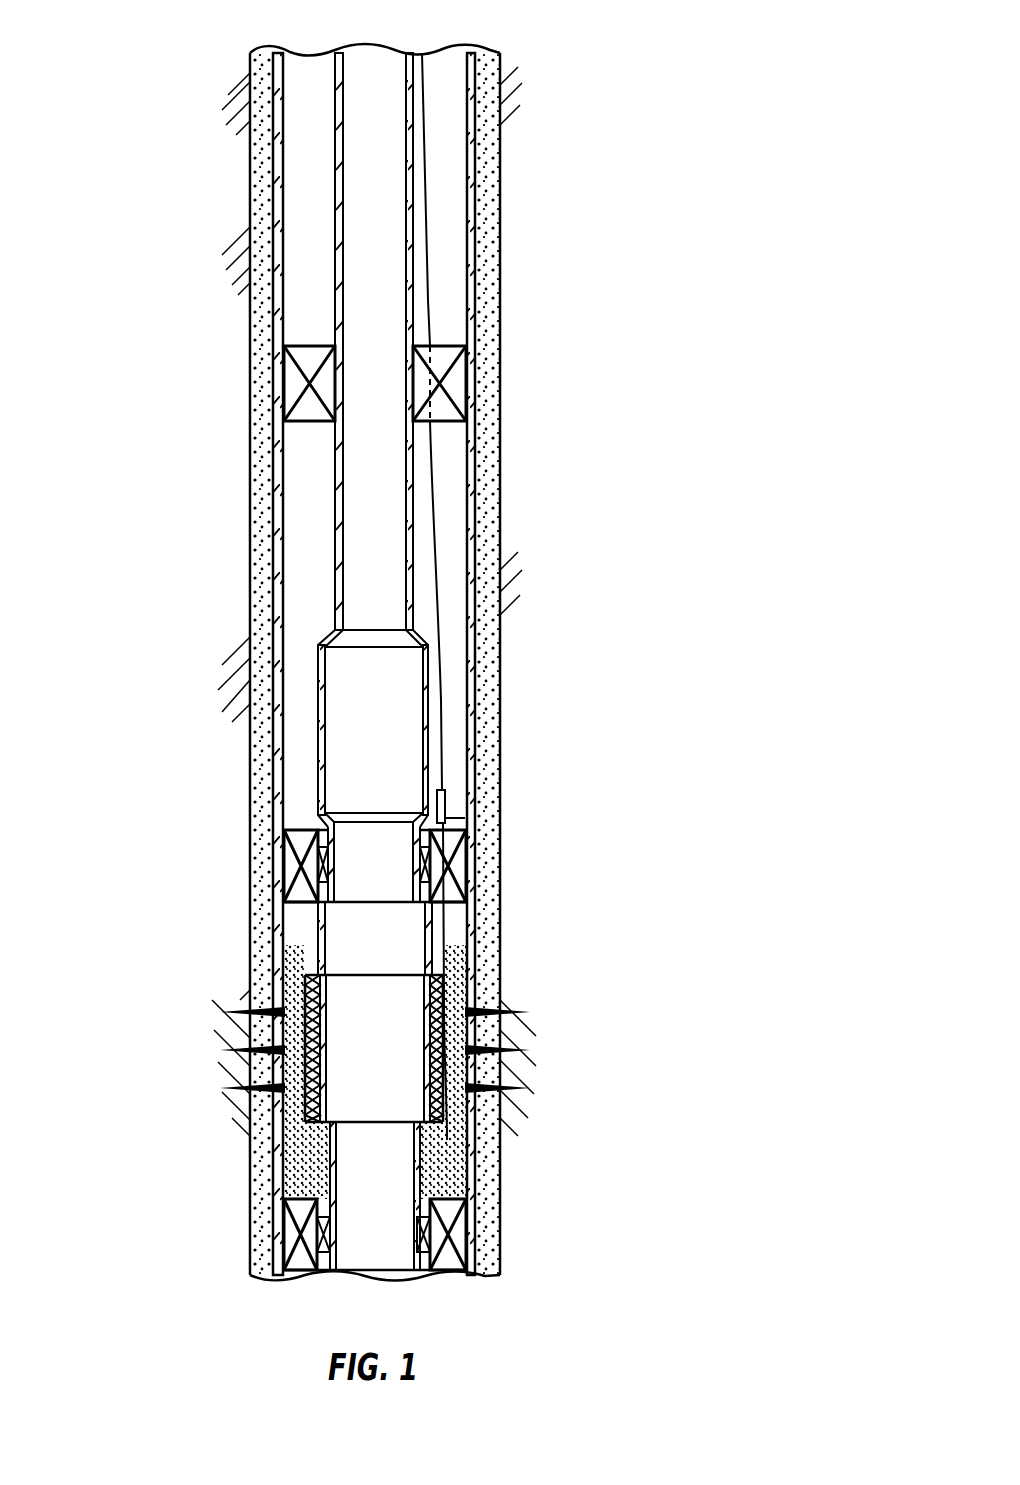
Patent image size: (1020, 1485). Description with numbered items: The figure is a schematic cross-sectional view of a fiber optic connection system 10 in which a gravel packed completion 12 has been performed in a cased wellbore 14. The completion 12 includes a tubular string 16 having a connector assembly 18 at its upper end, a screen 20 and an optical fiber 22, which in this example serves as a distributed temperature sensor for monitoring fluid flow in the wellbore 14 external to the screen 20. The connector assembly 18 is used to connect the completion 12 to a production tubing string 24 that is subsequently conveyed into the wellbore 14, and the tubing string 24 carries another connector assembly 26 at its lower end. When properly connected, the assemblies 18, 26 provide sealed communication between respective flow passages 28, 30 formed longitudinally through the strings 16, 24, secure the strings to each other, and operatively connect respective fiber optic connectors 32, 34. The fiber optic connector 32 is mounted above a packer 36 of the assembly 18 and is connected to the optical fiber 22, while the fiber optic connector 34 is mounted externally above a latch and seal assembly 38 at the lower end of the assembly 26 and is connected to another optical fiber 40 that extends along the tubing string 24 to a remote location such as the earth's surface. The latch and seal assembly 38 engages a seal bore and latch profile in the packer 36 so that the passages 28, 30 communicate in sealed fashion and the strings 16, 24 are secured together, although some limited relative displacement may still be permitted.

The fiber optic connection system 10 is at (690, 97).
The gravel packed completion 12 is at (458, 962).
The wellbore 14 is at (467, 158).
The tubular string 16 is at (316, 1150).
The connector assembly 18 is at (311, 824).
The screen 20 is at (305, 1106).
The optical fiber 22 is at (370, 1043).
The production tubing string 24 is at (420, 258).
The connector assembly 26 is at (445, 722).
The flow passage 28 is at (350, 918).
The flow passage 30 is at (370, 560).
The fiber optic connector 32 is at (447, 820).
The fiber optic connector 34 is at (448, 797).
The packer 36 is at (285, 852).
The latch and seal assembly 38 is at (322, 868).
The optical fiber 40 is at (430, 480).